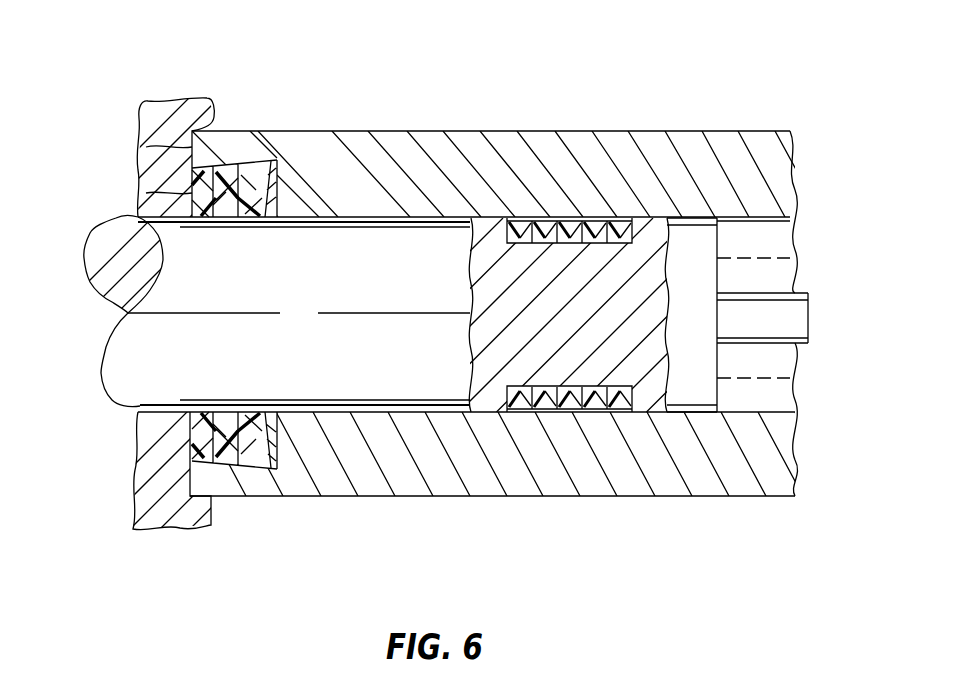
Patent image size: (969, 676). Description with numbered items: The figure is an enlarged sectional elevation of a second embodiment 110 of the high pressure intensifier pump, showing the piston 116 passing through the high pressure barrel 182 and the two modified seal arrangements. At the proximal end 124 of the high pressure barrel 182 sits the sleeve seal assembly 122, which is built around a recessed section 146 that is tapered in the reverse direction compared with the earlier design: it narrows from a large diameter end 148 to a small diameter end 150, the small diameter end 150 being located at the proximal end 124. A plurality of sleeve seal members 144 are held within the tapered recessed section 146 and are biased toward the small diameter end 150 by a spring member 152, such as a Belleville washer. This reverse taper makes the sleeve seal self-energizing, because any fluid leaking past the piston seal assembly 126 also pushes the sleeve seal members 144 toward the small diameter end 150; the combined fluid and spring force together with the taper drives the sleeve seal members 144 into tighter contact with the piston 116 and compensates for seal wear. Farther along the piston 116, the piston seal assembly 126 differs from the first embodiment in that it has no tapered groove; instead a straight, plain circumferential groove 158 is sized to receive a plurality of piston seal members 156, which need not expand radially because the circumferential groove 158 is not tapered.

The second embodiment of high pressure intensifier pump 110 is at (135, 36).
The piston 116 is at (100, 341).
The sleeve seal assembly 122 is at (238, 482).
The proximal end 124 is at (146, 139).
The piston seal assembly 126 is at (604, 430).
The sleeve seal members 144 is at (200, 218).
The recessed section 146 is at (247, 162).
The large diameter end 148 is at (284, 178).
The small diameter end 150 is at (146, 194).
The spring member 152 is at (277, 438).
The piston seal members 156 is at (568, 417).
The circumferential groove 158 is at (557, 248).
The high pressure barrel 182 is at (641, 131).